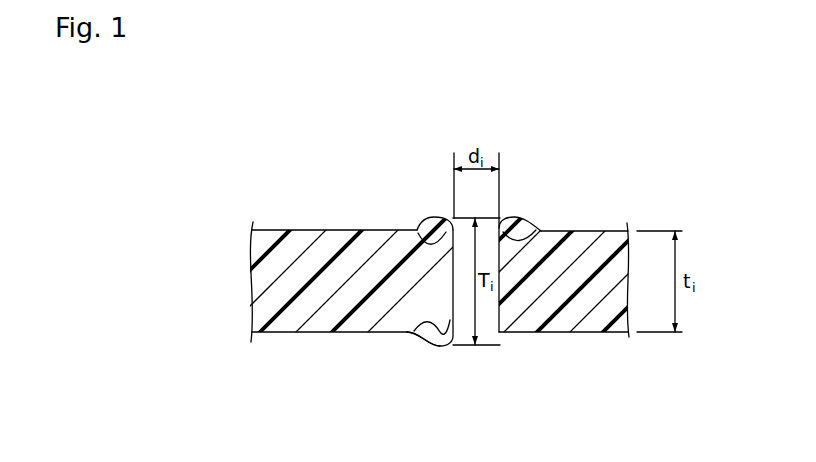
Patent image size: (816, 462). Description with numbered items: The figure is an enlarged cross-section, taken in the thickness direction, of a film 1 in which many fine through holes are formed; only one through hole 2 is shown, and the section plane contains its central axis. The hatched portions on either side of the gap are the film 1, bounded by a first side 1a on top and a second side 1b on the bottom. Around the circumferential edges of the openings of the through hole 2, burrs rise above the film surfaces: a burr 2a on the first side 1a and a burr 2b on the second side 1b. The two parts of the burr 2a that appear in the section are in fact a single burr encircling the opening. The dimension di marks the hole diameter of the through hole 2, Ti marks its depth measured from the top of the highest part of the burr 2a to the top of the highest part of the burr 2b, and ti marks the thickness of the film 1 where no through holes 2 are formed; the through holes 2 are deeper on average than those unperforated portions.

The film 1 is at (493, 233).
The first side 1a is at (303, 230).
The second side 1b is at (302, 332).
The through hole 2 is at (512, 272).
The burr 2a is at (408, 257).
The burr 2b is at (414, 333).